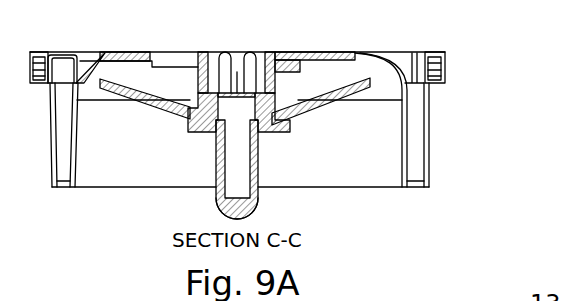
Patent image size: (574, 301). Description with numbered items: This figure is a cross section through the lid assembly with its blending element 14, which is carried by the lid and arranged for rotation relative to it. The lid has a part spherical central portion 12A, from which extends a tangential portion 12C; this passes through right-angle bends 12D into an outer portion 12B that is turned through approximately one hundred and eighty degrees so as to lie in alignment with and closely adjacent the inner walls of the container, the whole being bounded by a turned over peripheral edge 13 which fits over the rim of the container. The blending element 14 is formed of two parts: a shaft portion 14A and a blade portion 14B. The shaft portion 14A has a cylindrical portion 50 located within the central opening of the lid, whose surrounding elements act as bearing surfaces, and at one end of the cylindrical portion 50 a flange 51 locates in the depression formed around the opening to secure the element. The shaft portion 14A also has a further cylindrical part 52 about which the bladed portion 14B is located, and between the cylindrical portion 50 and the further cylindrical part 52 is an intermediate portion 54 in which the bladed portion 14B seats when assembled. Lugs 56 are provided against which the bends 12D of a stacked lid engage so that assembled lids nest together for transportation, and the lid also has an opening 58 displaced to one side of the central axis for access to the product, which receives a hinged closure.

The part spherical central portion 12A is at (392, 58).
The outer portion 12B is at (428, 138).
The tangential portion 12C is at (403, 150).
The right-angle bends 12D is at (410, 187).
The turned over peripheral edge 13 is at (448, 78).
The blending element 14 is at (207, 155).
The shaft portion 14A is at (238, 70).
The blade portion 14B is at (290, 130).
The cylindrical portion 50 is at (277, 85).
The flange 51 is at (285, 50).
The further cylindrical part 52 is at (258, 200).
The intermediate portion 54 is at (187, 130).
The lugs 56 is at (416, 62).
The opening 58 is at (116, 52).